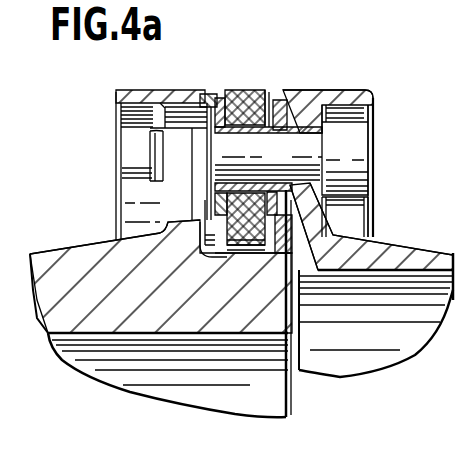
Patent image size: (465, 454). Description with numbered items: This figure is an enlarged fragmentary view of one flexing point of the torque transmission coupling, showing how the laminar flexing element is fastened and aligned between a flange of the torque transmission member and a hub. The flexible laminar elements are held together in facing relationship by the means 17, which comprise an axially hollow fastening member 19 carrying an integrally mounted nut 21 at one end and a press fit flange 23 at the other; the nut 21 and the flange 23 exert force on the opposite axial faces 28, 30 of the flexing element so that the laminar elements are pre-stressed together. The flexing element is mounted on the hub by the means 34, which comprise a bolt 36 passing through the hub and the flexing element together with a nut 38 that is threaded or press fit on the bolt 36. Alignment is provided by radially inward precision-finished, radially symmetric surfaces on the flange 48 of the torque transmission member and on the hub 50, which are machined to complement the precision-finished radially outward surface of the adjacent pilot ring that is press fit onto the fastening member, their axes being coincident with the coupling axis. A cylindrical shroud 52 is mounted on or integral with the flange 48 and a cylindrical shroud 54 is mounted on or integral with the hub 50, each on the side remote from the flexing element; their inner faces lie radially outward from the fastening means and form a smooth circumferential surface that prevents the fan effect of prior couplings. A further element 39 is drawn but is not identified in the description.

The means for holding the laminar elements together 17 is at (245, 197).
The axially hollow fastening member 19 is at (243, 96).
The integrally mounted nut 21 is at (219, 97).
The press fit flange 23 is at (270, 137).
The axial face 28 is at (226, 95).
The axial face 30 is at (269, 92).
The means for mounting the flexing elements on the hubs 34 is at (378, 158).
The bolt 36 is at (310, 131).
The nut 38 is at (376, 133).
The nut 39 is at (170, 89).
The flange of the torque transmission member 48 is at (132, 89).
The hub 50 is at (352, 90).
The cylindrical shroud 52 is at (117, 193).
The cylindrical shroud 54 is at (372, 221).